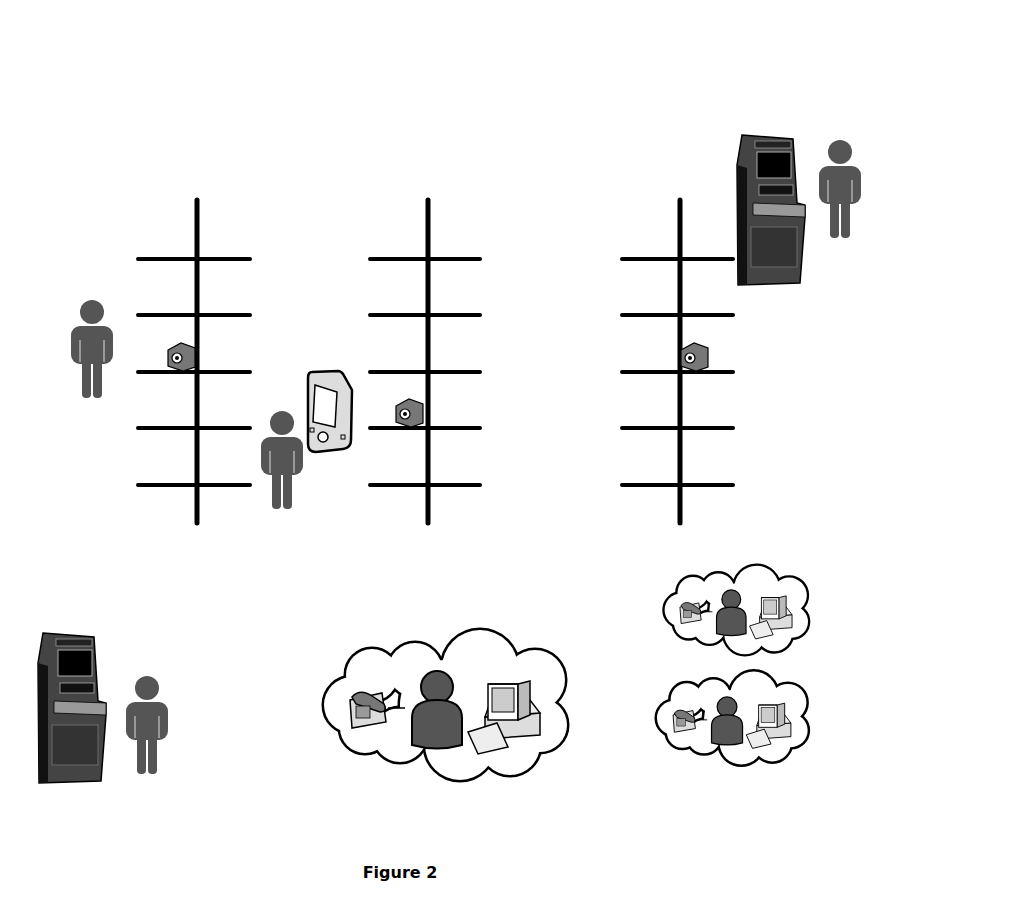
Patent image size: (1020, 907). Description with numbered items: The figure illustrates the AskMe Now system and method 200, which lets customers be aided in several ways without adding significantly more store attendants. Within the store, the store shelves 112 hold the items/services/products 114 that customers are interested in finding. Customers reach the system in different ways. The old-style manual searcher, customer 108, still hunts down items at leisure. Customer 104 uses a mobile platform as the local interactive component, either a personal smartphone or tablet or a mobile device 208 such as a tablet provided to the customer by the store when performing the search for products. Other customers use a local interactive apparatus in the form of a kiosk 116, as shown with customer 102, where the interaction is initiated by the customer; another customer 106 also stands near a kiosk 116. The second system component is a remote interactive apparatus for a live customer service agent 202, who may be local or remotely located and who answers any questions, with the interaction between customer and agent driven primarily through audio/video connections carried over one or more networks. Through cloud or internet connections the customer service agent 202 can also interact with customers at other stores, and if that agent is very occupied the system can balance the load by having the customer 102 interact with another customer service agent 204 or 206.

The AskMe Now system and method 200 is at (560, 127).
The store shelves 112 is at (633, 212).
The items/services/products 114 is at (390, 383).
The customer 108 is at (72, 303).
The customer 104 is at (290, 400).
The mobile device provided by the store 208 is at (327, 378).
The kiosk 116 is at (770, 140).
The customer 106 is at (862, 182).
The customer 102 is at (163, 710).
The customer service agent 202 is at (479, 642).
The another customer service agent 204 is at (756, 582).
The another customer service agent 206 is at (770, 693).